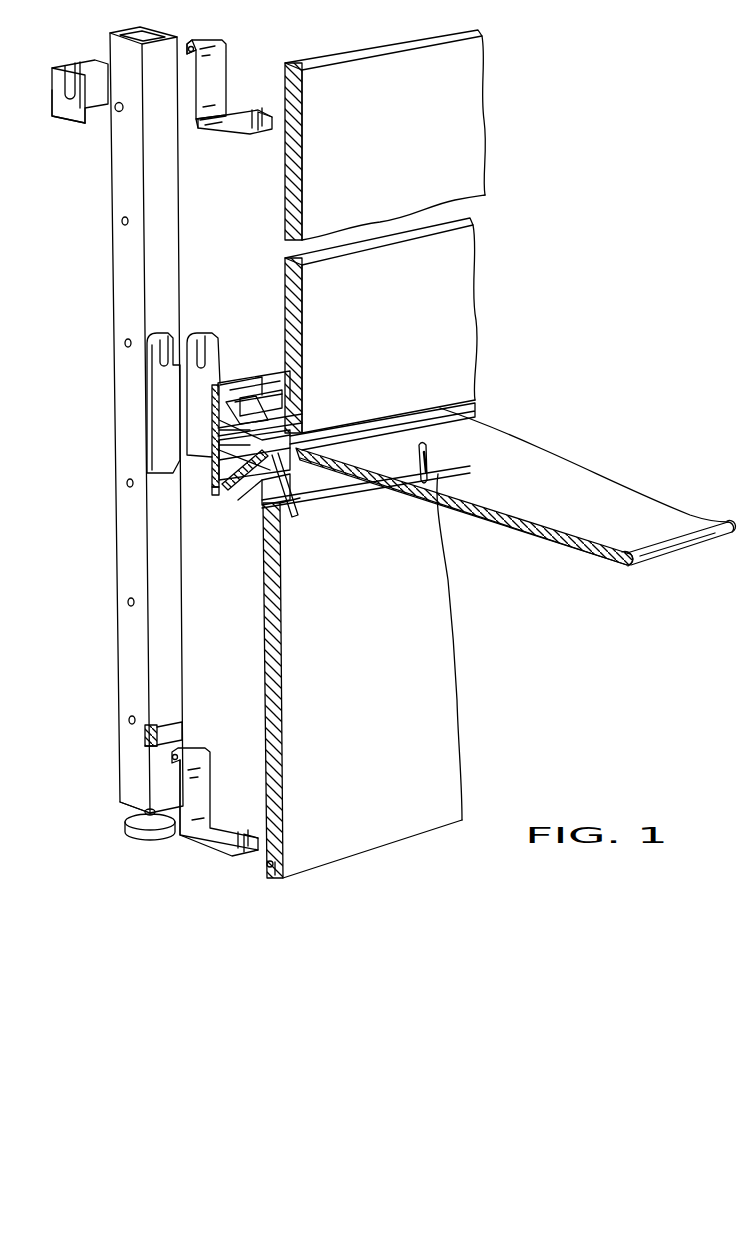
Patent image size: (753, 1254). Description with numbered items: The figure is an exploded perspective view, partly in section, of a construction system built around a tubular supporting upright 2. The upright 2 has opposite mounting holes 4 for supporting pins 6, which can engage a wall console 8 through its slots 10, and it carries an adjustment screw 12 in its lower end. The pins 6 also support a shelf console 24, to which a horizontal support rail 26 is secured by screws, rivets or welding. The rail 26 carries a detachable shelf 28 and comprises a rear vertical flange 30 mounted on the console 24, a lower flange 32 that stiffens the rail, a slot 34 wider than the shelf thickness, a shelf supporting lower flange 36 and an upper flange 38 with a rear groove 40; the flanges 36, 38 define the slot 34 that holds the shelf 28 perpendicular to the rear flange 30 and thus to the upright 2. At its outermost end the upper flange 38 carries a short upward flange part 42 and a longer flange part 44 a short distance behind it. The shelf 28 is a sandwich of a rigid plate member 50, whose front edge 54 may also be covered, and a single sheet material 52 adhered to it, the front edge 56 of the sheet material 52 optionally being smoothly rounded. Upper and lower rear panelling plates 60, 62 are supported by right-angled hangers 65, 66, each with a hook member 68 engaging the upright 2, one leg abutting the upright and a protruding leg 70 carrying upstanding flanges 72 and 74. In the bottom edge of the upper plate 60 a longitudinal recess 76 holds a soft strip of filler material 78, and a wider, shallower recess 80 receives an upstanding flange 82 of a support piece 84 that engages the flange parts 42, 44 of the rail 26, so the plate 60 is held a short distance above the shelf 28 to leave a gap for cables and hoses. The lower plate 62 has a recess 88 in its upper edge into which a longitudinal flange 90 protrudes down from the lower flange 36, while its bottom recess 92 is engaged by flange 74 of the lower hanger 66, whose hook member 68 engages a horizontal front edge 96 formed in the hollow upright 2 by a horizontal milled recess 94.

The supporting upright 2 is at (152, 208).
The mounting hole 4 is at (120, 224).
The supporting pin 6 is at (118, 112).
The wall console 8 is at (50, 108).
The slot 10 is at (48, 78).
The adjustment screw 12 is at (126, 826).
The shelf console 24 is at (210, 413).
The horizontal support rail 26 is at (258, 372).
The detachable shelf 28 is at (422, 486).
The rear vertical flange 30 is at (220, 485).
The lower flange 32 is at (253, 485).
The slot 34 is at (212, 445).
The shelf supporting lower flange 36 is at (243, 515).
The upper flange 38 is at (215, 432).
The rear groove 40 is at (172, 405).
The short flange part 42 is at (256, 400).
The longer flange part 44 is at (275, 378).
The rigid plate member 50 is at (500, 522).
The sheet material 52 is at (525, 513).
The front edge 54 is at (625, 570).
The front edge 56 is at (682, 550).
The upper rear panelling plate 60 is at (350, 86).
The lower rear panelling plate 62 is at (385, 825).
The hanger 65 is at (230, 68).
The hanger 66 is at (203, 789).
The hook member 68 is at (190, 46).
The protruding leg 70 is at (228, 124).
The upstanding flange 72 is at (223, 849).
The upstanding flange 74 is at (256, 110).
The longitudinal recess 76 is at (302, 410).
The filler material strip 78 is at (372, 430).
The longitudinal recess 80 is at (292, 506).
The upstanding flange 82 is at (258, 404).
The support piece 84 is at (262, 392).
The longitudinal recess 88 is at (258, 494).
The longitudinal flange 90 is at (290, 518).
The longitudinal recess 92 is at (269, 868).
The horizontal milled recess 94 is at (182, 727).
The horizontal front edge 96 is at (162, 742).